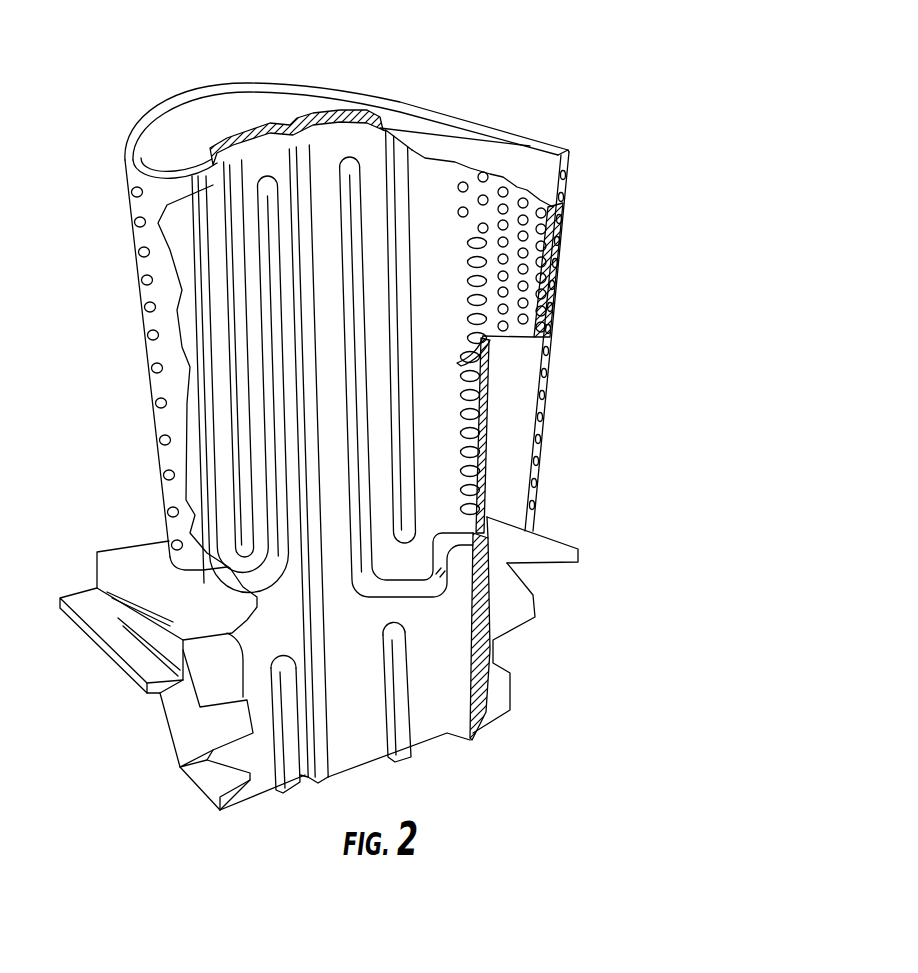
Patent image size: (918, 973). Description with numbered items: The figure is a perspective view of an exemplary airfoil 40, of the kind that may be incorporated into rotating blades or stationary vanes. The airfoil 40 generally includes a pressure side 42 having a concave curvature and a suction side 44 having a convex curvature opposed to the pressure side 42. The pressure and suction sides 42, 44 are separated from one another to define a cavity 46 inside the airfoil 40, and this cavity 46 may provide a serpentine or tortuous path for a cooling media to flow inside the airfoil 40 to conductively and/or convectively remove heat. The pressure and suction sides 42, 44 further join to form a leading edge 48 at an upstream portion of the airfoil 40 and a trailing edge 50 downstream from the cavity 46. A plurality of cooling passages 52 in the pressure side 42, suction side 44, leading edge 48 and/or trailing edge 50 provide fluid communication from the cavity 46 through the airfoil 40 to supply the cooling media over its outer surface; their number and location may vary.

The airfoil 40 is at (690, 244).
The pressure side 42 is at (432, 318).
The suction side 44 is at (422, 104).
The cavity 46 is at (223, 338).
The leading edge 48 is at (140, 282).
The trailing edge 50 is at (557, 323).
The cooling passages 52 is at (167, 510).